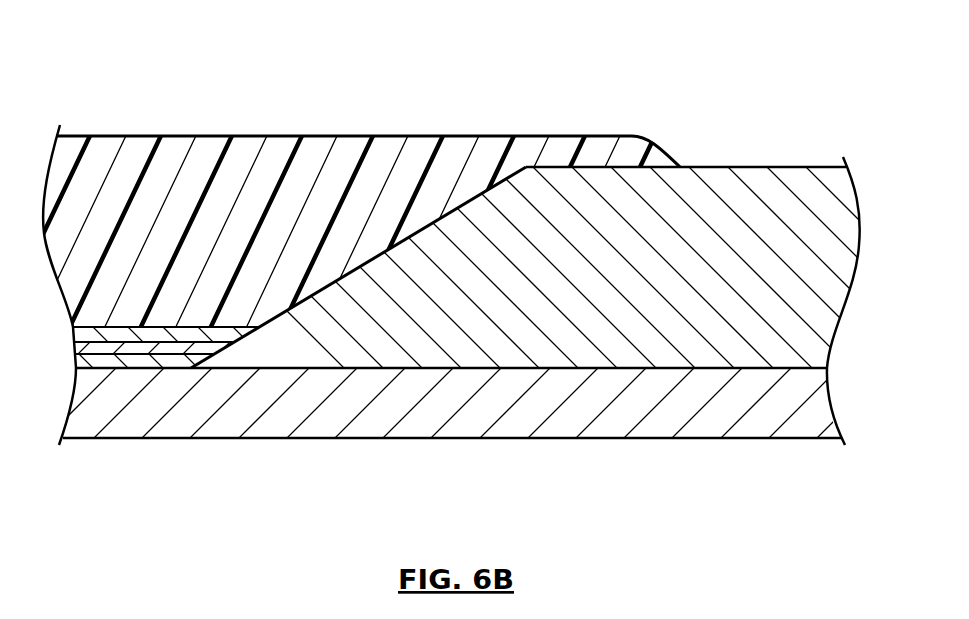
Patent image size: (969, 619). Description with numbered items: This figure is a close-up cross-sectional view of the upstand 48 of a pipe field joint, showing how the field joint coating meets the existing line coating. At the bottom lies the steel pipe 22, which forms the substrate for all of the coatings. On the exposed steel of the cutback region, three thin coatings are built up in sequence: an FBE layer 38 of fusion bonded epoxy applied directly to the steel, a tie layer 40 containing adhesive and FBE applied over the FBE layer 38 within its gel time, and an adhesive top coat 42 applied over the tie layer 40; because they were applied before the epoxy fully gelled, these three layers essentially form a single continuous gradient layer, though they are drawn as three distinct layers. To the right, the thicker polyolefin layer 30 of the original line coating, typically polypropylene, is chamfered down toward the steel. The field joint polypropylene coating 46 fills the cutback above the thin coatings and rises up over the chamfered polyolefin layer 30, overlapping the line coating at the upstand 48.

The steel pipe 22 is at (692, 397).
The polyolefin layer 30 is at (758, 215).
The FBE layer 38 is at (103, 362).
The tie layer 40 is at (145, 347).
The adhesive top coat 42 is at (187, 333).
The field joint polypropylene coating 46 is at (224, 183).
The upstand 48 is at (602, 153).